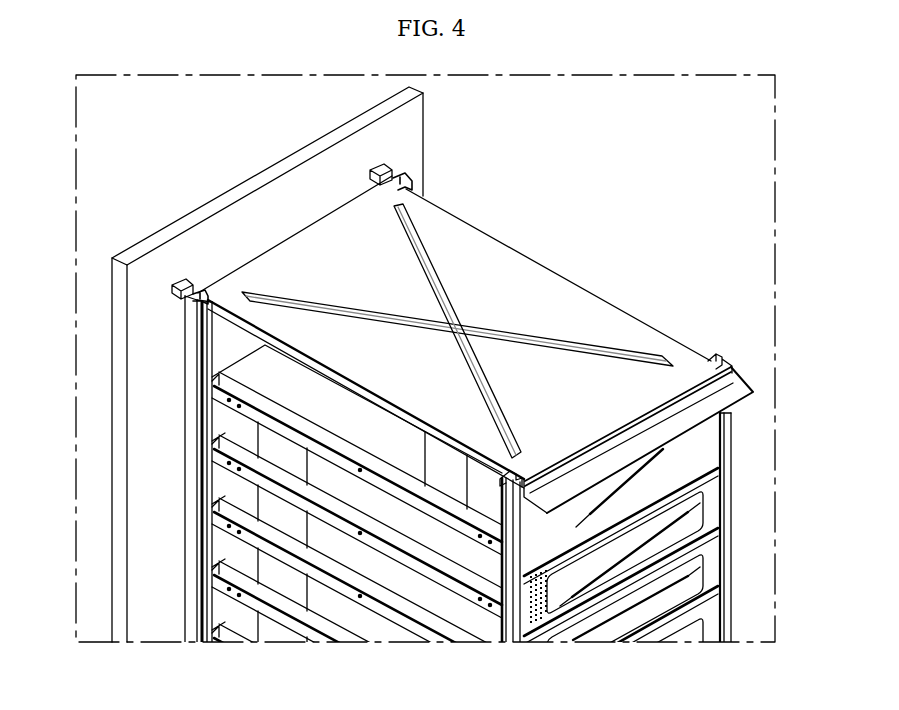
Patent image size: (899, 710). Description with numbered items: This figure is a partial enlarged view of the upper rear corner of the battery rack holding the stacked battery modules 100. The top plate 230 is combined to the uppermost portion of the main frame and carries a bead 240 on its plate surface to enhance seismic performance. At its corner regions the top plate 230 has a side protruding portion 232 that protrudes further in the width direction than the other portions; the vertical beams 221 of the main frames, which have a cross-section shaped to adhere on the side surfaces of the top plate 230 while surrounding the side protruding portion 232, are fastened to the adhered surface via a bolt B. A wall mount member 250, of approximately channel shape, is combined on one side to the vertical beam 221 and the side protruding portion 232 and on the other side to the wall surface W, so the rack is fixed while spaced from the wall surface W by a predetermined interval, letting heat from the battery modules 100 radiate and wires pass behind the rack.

The battery module 100 is at (721, 567).
The vertical beam 221 is at (187, 420).
The top plate 230 is at (523, 307).
The side protruding portion 232 is at (193, 288).
The bead 240 is at (438, 290).
The wall mount member 250 is at (177, 280).
The wall surface W is at (255, 210).
The bolt B is at (198, 313).